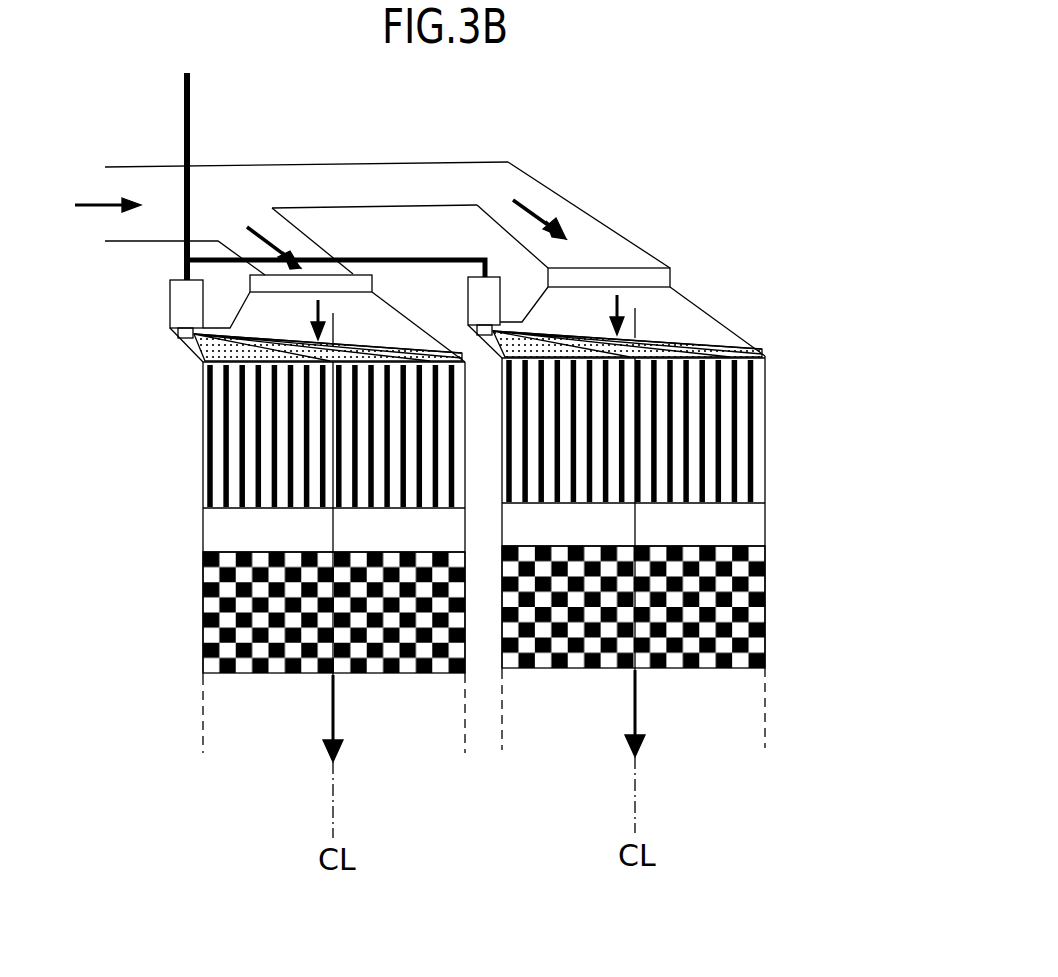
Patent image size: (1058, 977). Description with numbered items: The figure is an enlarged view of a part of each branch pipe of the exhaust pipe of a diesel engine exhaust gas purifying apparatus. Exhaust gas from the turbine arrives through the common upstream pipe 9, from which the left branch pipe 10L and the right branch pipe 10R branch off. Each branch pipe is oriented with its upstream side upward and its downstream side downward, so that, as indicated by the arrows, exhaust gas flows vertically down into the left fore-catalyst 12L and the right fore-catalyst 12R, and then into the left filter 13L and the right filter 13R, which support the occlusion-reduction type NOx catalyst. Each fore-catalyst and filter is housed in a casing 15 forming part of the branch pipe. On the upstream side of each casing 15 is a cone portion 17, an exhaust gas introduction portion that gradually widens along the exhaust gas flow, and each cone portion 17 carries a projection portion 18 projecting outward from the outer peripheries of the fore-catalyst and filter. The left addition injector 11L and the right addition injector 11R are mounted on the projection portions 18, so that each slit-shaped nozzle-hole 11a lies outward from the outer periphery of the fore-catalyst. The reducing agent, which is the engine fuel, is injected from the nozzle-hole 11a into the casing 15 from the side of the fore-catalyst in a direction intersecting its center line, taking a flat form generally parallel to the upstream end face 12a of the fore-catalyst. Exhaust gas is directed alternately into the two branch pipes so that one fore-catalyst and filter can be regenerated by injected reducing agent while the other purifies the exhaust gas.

The upstream pipe 9 is at (126, 167).
The left branch pipe 10L is at (317, 241).
The right branch pipe 10R is at (610, 237).
The left addition injector 11L is at (167, 313).
The right addition injector 11R is at (502, 285).
The nozzle-hole 11a is at (190, 343).
The left fore-catalyst 12L is at (218, 448).
The right fore-catalyst 12R is at (745, 442).
The upstream end face 12a is at (270, 358).
The left particulate filter 13L is at (217, 608).
The right particulate filter 13R is at (755, 583).
The casing 15 is at (205, 530).
The cone portion 17 is at (395, 303).
The projection portion 18 is at (220, 327).